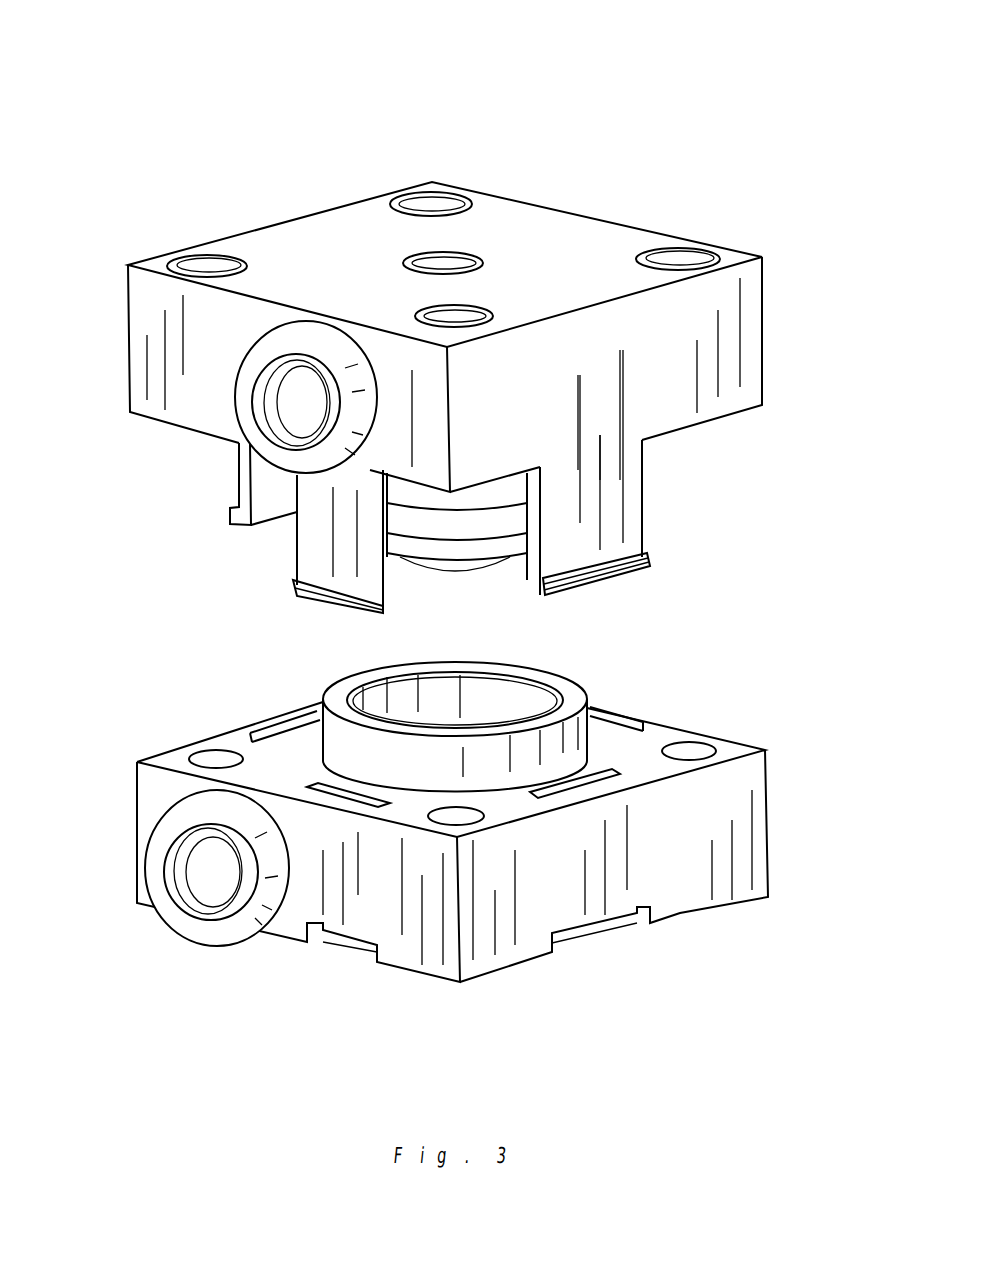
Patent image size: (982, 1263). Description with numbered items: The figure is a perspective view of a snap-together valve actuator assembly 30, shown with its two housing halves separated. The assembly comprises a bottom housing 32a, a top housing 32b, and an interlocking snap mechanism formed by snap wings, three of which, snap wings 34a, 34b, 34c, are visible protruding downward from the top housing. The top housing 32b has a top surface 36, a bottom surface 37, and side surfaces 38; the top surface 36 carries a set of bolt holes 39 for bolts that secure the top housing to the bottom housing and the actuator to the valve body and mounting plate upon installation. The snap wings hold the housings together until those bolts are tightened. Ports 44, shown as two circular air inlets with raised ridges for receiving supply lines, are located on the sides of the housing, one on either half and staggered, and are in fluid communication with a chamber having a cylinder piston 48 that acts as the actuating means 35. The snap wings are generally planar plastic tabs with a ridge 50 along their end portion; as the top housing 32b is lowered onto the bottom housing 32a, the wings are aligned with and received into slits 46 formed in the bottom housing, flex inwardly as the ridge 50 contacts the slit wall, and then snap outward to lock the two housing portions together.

The actuator assembly 30 is at (516, 122).
The bottom housing 32a is at (770, 847).
The top housing 32b is at (760, 378).
The snap wing 34a is at (238, 497).
The snap wing 34b is at (297, 553).
The snap wing 34c is at (635, 490).
The actuating means 35 is at (418, 583).
The top surface 36 is at (530, 222).
The bottom surface 37 is at (165, 420).
The side surfaces 38 is at (672, 327).
The bolt holes 39 is at (204, 268).
The ports 44 is at (285, 402).
The slits 46 is at (320, 790).
The cylinder piston 48 is at (467, 527).
The ridge 50 is at (617, 578).